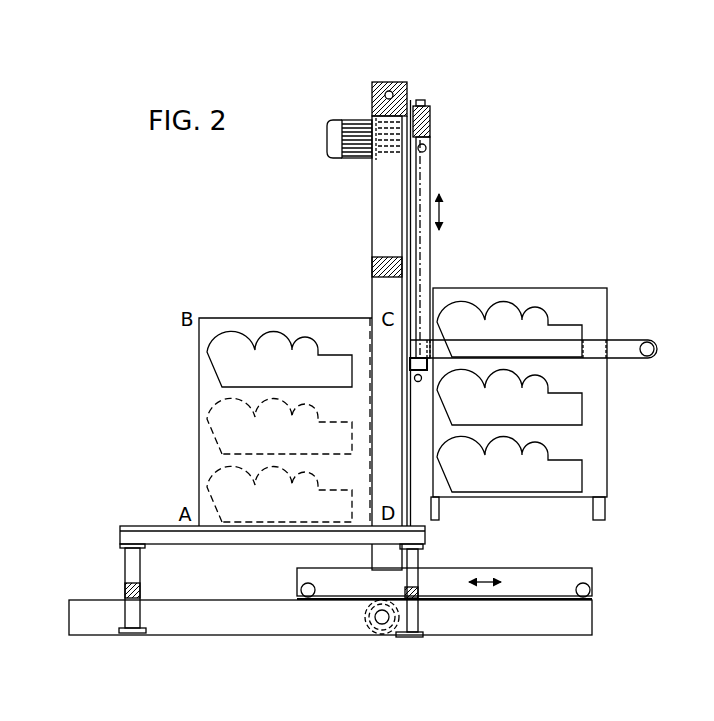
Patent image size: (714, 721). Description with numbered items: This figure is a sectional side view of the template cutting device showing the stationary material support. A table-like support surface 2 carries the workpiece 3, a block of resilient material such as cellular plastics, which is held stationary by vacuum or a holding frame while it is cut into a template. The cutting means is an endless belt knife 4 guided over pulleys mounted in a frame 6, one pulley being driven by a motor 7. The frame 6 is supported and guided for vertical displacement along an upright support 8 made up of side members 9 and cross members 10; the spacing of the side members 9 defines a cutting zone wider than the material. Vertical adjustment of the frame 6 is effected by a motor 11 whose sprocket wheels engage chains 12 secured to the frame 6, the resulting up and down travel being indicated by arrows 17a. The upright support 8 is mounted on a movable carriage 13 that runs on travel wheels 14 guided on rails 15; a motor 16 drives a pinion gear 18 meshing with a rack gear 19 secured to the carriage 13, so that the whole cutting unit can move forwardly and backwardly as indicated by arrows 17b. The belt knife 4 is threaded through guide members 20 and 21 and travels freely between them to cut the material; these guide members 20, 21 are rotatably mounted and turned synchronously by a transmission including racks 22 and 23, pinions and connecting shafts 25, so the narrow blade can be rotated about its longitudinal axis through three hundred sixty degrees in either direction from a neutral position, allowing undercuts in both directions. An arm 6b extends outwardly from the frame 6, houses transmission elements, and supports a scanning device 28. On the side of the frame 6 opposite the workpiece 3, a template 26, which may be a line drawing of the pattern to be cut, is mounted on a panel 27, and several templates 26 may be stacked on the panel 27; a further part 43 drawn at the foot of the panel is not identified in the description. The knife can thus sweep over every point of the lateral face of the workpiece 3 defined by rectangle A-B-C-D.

The table-like support surface 2 is at (146, 523).
The workpiece 3 is at (197, 374).
The endless belt knife 4 is at (423, 101).
The frame 6 is at (431, 113).
The arm 6b is at (537, 348).
The motor 7 is at (353, 137).
The upright support 8 is at (381, 70).
The side members 9 is at (382, 186).
The cross members 10 is at (372, 266).
The motor 11 is at (393, 92).
The chains 12 is at (406, 210).
The movable carriage 13 is at (448, 562).
The travel wheels 14 is at (301, 587).
The rails 15 is at (183, 599).
The motor 16 is at (386, 626).
The arrows 17a is at (447, 212).
The arrows 17b is at (486, 580).
The pinion gear 18 is at (368, 624).
The rack gear 19 is at (545, 602).
The guide member 20 is at (465, 395).
The guide member 21 is at (421, 380).
The rack 22 is at (470, 243).
The rack 23 is at (470, 243).
The connecting shafts 25 is at (418, 167).
The template 26 is at (465, 306).
The panel 27 is at (543, 383).
The scanning device 28 is at (648, 338).
The foot 43 is at (606, 510).